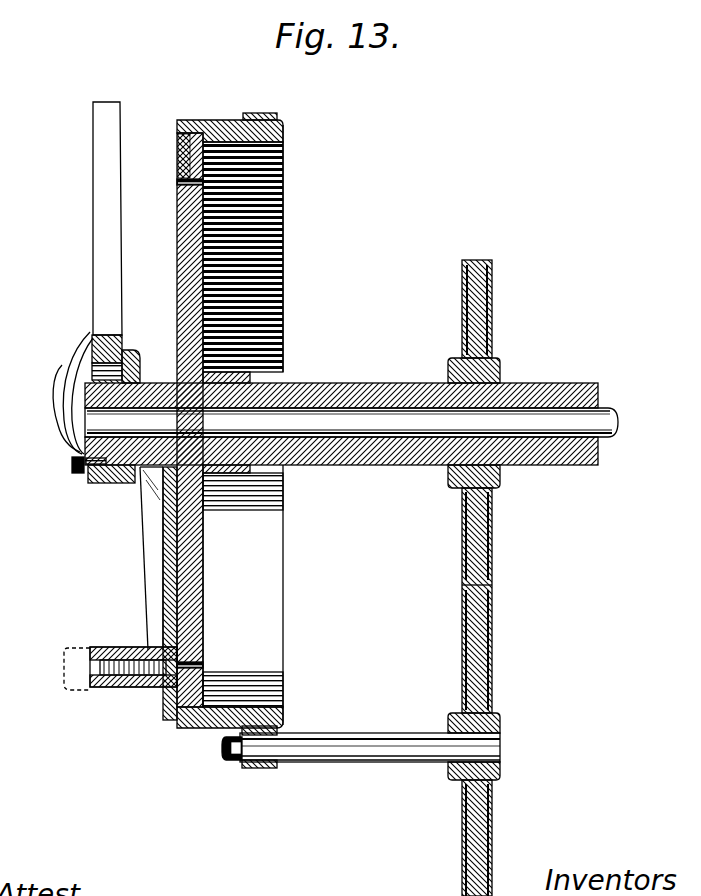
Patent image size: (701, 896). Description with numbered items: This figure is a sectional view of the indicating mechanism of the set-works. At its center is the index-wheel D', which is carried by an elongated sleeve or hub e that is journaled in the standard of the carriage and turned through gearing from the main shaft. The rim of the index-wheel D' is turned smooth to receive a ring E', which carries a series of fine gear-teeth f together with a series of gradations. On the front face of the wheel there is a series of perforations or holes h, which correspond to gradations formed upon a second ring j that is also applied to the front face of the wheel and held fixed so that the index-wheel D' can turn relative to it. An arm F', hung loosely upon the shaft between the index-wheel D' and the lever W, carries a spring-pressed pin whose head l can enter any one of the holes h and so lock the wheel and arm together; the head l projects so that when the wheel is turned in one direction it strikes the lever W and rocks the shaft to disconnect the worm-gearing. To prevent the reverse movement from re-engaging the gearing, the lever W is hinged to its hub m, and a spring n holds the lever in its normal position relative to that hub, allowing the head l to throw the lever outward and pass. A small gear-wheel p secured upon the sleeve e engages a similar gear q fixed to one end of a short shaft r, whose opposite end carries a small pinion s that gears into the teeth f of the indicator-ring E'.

The lever W is at (87, 218).
The spring n is at (78, 402).
The hub m is at (86, 450).
The elongated sleeve or hub e is at (300, 384).
The ring E' is at (230, 114).
The fine gear-teeth f is at (262, 117).
The ring j is at (177, 143).
The perforations or holes h is at (190, 185).
The index-wheel D' is at (261, 425).
The arm F' is at (145, 593).
The head l is at (113, 650).
The small gear-wheel p is at (492, 300).
The gear q is at (483, 680).
The short shaft r is at (370, 735).
The small pinion s is at (262, 762).